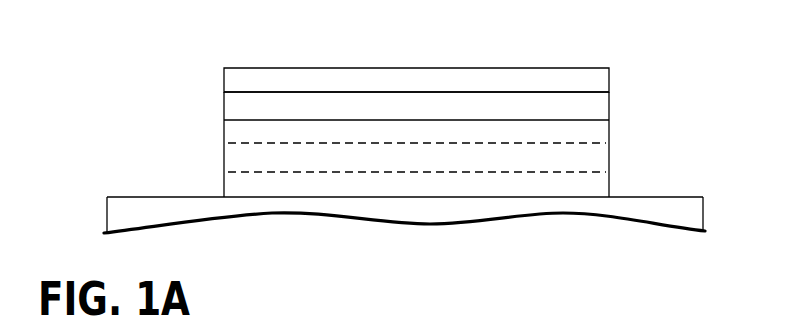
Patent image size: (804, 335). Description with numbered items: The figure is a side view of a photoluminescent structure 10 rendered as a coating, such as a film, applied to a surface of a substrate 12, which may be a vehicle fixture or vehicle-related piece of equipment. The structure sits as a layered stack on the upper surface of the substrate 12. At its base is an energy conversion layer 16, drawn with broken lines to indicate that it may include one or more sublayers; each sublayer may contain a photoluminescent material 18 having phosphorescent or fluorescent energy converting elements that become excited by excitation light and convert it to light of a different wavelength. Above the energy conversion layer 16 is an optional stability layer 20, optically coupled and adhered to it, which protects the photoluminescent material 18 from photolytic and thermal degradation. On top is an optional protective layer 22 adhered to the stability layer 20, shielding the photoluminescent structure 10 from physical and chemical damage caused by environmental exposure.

The photoluminescent structure 10 is at (551, 43).
The substrate 12 is at (651, 197).
The energy conversion layer 16 is at (224, 155).
The photoluminescent material 18 is at (566, 158).
The stability layer 20 is at (224, 106).
The protective layer 22 is at (309, 67).